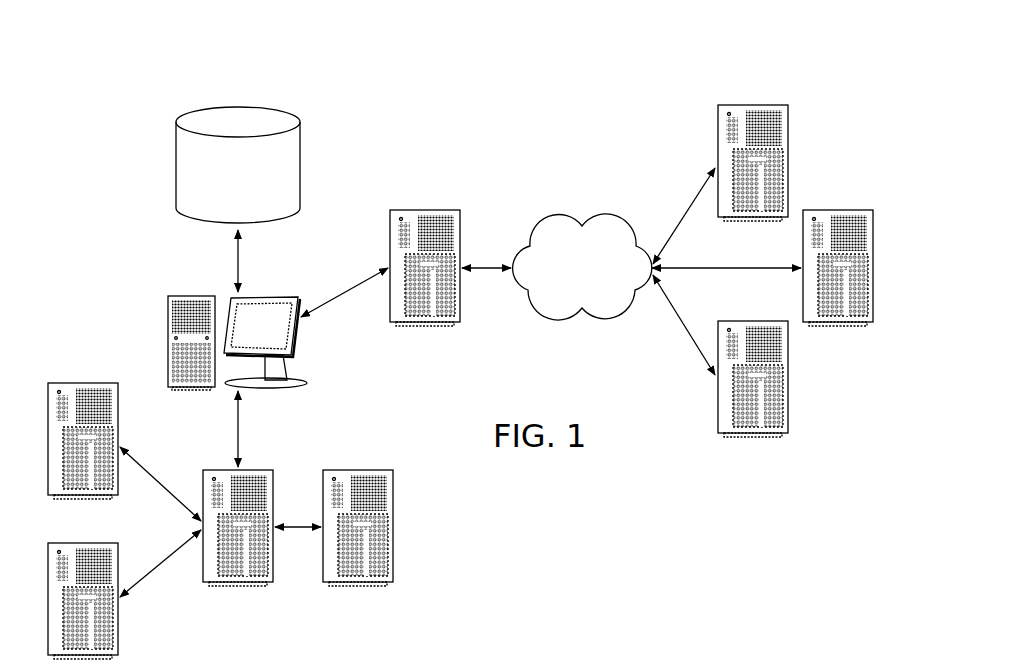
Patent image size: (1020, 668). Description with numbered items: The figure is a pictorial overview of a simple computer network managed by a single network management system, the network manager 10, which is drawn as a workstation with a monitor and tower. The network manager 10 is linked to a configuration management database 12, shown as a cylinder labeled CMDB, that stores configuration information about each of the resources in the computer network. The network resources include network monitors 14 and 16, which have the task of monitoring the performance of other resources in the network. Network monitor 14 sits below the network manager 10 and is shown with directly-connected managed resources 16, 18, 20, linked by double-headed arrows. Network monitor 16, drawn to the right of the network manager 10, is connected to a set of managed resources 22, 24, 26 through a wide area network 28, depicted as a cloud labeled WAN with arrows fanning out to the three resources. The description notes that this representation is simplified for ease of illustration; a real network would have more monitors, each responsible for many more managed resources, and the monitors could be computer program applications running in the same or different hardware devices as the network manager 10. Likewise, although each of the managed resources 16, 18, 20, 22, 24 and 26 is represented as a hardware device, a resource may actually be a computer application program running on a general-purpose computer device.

The network manager 10 is at (332, 356).
The configuration management database 12 is at (302, 167).
The network monitor 14 is at (272, 470).
The network monitor 16 is at (430, 207).
The managed resource 18 is at (87, 543).
The managed resource 20 is at (395, 522).
The managed resource 22 is at (755, 103).
The managed resource 24 is at (840, 210).
The managed resource 26 is at (787, 378).
The wide area network 28 is at (600, 216).